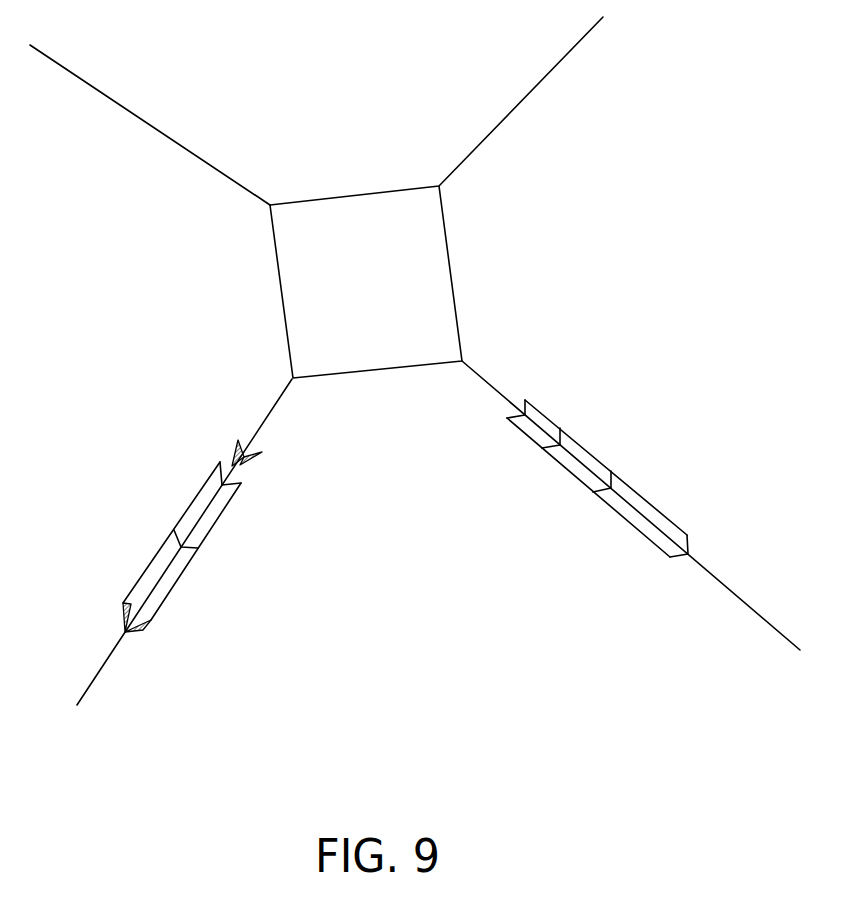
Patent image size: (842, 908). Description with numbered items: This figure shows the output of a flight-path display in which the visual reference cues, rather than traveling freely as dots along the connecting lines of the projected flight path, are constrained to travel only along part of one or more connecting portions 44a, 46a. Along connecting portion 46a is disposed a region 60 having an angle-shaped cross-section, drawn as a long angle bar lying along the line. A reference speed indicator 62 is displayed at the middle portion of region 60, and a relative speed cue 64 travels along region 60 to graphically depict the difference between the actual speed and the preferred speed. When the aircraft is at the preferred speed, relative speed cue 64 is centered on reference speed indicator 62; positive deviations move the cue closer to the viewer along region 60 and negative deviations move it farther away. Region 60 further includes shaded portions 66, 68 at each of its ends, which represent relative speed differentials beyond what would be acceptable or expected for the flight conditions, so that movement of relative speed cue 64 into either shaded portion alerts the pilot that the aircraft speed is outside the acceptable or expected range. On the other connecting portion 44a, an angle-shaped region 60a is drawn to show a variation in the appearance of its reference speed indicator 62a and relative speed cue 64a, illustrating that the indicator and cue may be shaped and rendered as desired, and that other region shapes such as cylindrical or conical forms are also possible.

The connecting portion 44a is at (497, 393).
The connecting portion 46a is at (100, 668).
The region 60 is at (205, 534).
The reference speed indicator 62 is at (175, 530).
The relative speed cue 64 is at (219, 462).
The shaded portion 66 is at (143, 631).
The shaded portion 68 is at (262, 456).
The angle-shaped region 60a is at (608, 461).
The reference speed indicator 62a is at (611, 471).
The relative speed cue 64a is at (559, 428).